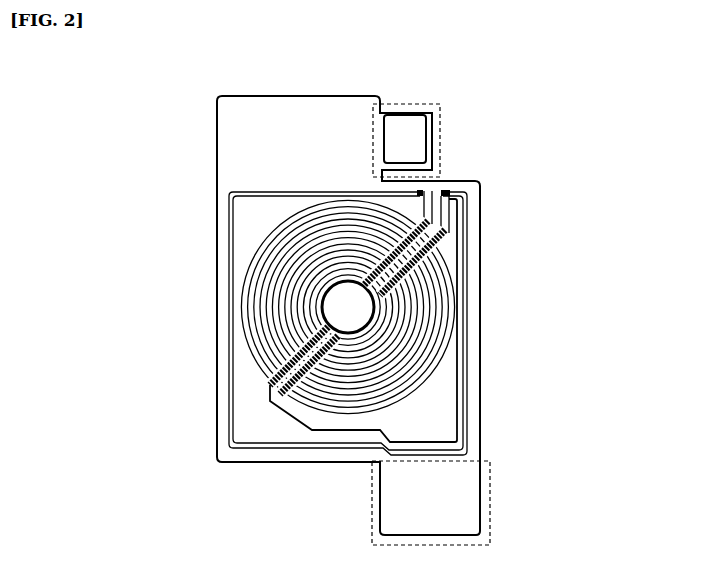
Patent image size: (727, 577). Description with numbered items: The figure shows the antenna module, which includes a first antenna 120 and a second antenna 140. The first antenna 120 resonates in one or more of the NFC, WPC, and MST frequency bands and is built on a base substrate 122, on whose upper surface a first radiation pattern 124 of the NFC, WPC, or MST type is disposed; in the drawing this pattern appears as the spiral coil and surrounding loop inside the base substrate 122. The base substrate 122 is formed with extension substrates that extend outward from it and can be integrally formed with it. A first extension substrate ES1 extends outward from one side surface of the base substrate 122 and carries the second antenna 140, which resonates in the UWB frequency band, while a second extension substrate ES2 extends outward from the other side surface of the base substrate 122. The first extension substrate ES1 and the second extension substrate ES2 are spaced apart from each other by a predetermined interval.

The first extension substrate ES1 is at (440, 113).
The second antenna 140 is at (427, 137).
The first antenna 120 is at (433, 322).
The base substrate 122 is at (481, 282).
The first radiation pattern 124 is at (467, 348).
The second extension substrate ES2 is at (490, 463).